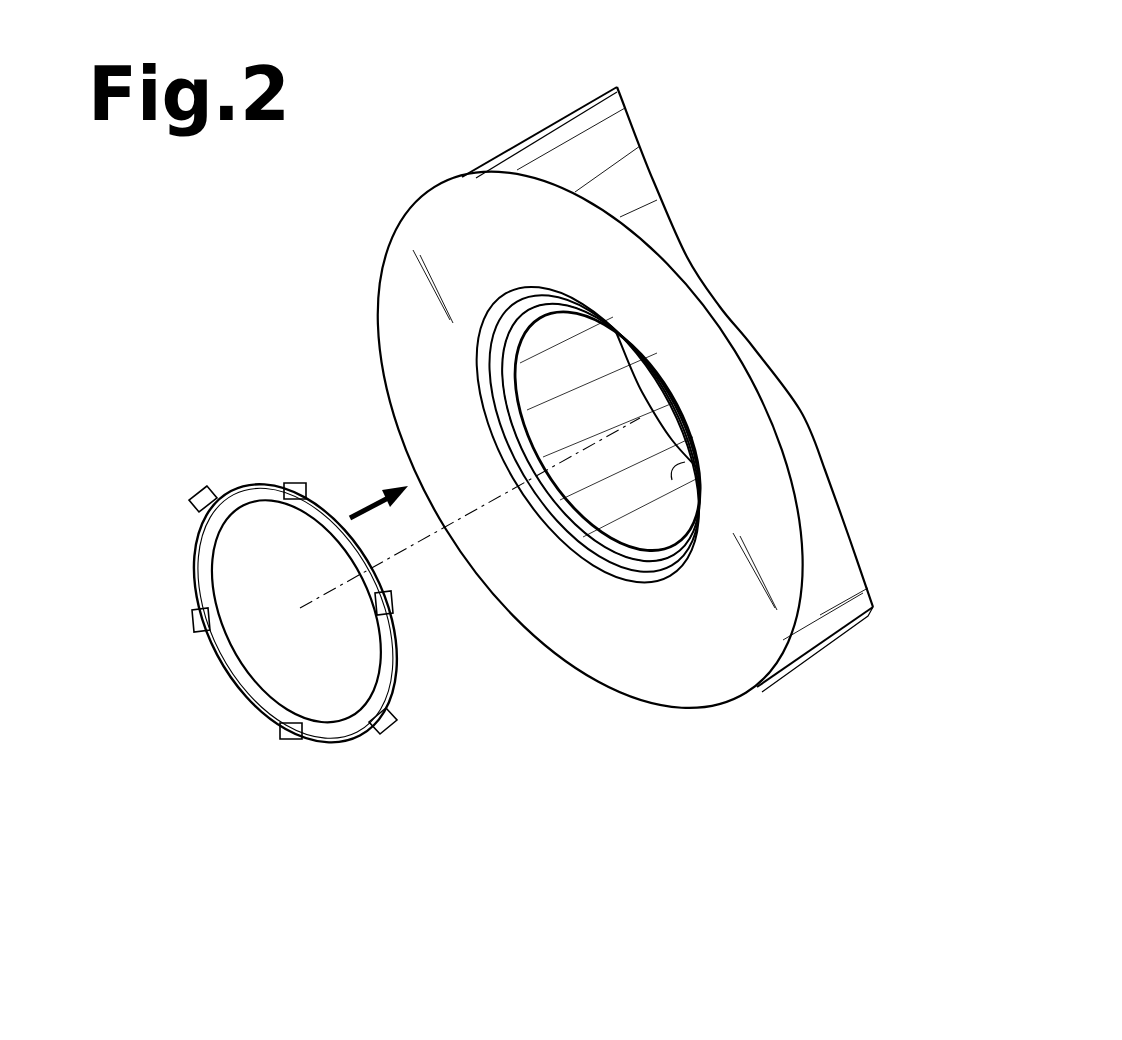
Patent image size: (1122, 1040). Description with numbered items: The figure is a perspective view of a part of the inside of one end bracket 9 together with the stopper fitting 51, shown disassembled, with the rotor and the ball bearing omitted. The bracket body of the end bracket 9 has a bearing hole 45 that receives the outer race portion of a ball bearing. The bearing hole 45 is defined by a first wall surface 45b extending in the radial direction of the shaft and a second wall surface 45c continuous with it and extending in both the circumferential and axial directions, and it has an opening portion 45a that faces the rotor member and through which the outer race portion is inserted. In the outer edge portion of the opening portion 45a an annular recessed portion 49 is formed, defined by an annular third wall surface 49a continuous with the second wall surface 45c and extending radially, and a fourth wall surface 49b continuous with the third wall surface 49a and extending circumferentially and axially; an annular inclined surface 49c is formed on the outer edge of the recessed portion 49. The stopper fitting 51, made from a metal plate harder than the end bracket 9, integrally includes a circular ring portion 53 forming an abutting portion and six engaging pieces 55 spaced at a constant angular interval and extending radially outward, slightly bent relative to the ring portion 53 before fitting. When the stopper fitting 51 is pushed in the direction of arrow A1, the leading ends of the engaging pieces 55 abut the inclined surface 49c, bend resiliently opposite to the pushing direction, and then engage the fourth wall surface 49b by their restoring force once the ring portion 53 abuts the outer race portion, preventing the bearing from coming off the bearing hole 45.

The end bracket 9 is at (474, 137).
The bearing hole 45 is at (702, 465).
The opening portion 45a is at (651, 565).
The first wall surface 45b is at (673, 447).
The second wall surface 45c is at (682, 512).
The recessed portion 49 is at (598, 573).
The third wall surface 49a is at (626, 556).
The fourth wall surface 49b is at (554, 549).
The inclined surface 49c is at (584, 566).
The stopper fitting 51 is at (182, 581).
The ring portion 53 is at (230, 491).
The engaging pieces 55 is at (290, 483).
The pushing direction A1 is at (362, 502).